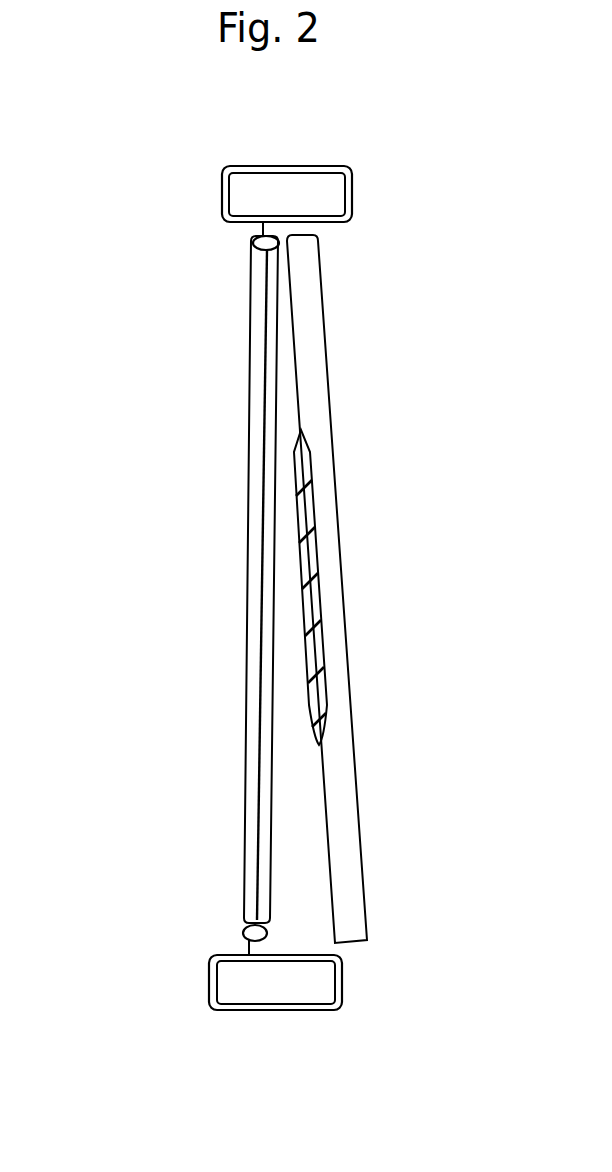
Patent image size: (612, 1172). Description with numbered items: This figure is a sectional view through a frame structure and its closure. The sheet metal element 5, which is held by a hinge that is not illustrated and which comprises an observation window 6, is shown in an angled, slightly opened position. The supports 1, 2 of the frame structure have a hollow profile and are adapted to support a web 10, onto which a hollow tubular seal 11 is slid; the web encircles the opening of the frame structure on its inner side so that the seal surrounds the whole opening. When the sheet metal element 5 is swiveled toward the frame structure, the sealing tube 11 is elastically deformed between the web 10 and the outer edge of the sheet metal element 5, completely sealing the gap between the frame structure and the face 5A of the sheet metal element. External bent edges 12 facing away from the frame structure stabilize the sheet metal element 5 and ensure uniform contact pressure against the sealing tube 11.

The support 1 is at (287, 162).
The support 2 is at (223, 1017).
The sheet metal element 5 is at (250, 609).
The face of the sheet metal element 5A is at (214, 609).
The observation window 6 is at (366, 587).
The web 10 is at (165, 562).
The hollow tubular seal 11 is at (159, 585).
The external bent edges 12 is at (368, 589).